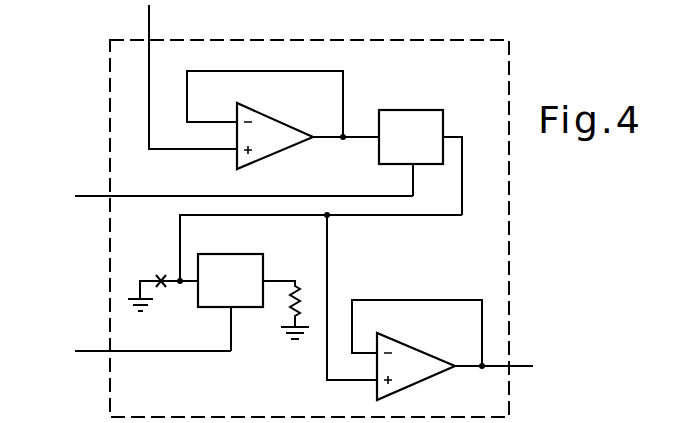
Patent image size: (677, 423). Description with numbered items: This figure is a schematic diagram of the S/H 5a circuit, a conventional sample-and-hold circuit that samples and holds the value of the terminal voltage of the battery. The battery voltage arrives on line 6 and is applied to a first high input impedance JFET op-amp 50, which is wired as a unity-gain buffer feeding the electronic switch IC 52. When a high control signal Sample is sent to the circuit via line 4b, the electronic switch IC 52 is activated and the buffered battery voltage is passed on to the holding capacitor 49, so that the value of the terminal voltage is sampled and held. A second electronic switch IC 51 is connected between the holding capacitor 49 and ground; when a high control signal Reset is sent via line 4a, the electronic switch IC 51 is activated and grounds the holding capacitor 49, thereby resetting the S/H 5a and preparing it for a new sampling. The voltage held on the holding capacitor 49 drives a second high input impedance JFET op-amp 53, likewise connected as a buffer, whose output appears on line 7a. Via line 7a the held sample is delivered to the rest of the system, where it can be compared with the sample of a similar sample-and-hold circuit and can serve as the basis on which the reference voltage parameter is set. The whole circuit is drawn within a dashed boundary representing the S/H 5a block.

The S/H circuit 5a is at (269, 40).
The line 6 is at (153, 15).
The op-amp 50 is at (280, 155).
The electronic switch IC 52 is at (395, 84).
The line 4b is at (92, 168).
The electronic switch IC 51 is at (252, 254).
The holding capacitor 49 is at (158, 274).
The line 4a is at (92, 323).
The op-amp 53 is at (428, 357).
The line 7a is at (520, 366).